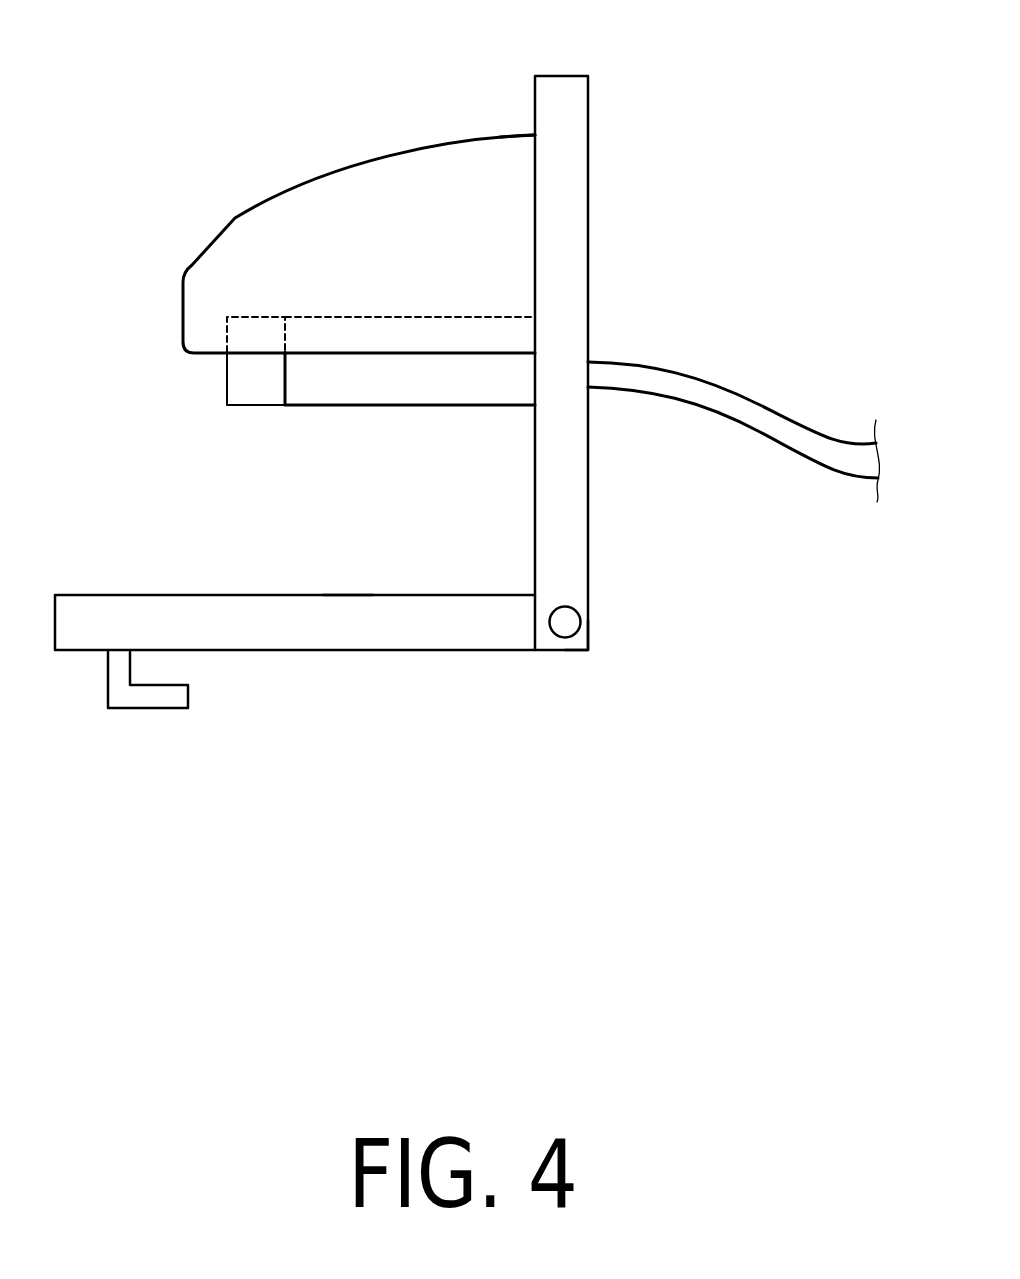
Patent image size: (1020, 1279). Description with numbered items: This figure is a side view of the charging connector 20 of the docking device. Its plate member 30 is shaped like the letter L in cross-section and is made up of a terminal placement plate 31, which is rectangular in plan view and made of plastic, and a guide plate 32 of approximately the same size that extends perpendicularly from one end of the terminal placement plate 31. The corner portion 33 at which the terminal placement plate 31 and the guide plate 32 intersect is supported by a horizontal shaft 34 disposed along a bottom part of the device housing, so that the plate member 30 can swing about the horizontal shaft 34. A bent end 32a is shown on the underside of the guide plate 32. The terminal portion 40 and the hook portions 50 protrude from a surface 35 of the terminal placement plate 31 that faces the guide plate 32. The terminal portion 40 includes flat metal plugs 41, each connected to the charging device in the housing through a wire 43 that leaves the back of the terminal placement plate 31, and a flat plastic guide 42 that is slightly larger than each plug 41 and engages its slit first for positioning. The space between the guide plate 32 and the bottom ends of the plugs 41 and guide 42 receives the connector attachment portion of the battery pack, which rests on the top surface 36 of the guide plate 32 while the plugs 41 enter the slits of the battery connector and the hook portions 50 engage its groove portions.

The charging connector 20 is at (468, 903).
The plate member 30 is at (380, 456).
The terminal placement plate 31 is at (567, 488).
The guide plate 32 is at (213, 618).
The hook portion 32a is at (140, 695).
The corner portion 33 is at (578, 593).
The horizontal shaft 34 is at (567, 620).
The surface 35 is at (533, 177).
The top surface 36 is at (323, 597).
The terminal portion 40 is at (379, 450).
The plug 41 is at (325, 380).
The guide 42 is at (253, 380).
The wire 43 is at (692, 370).
The hook portion 50 is at (231, 262).